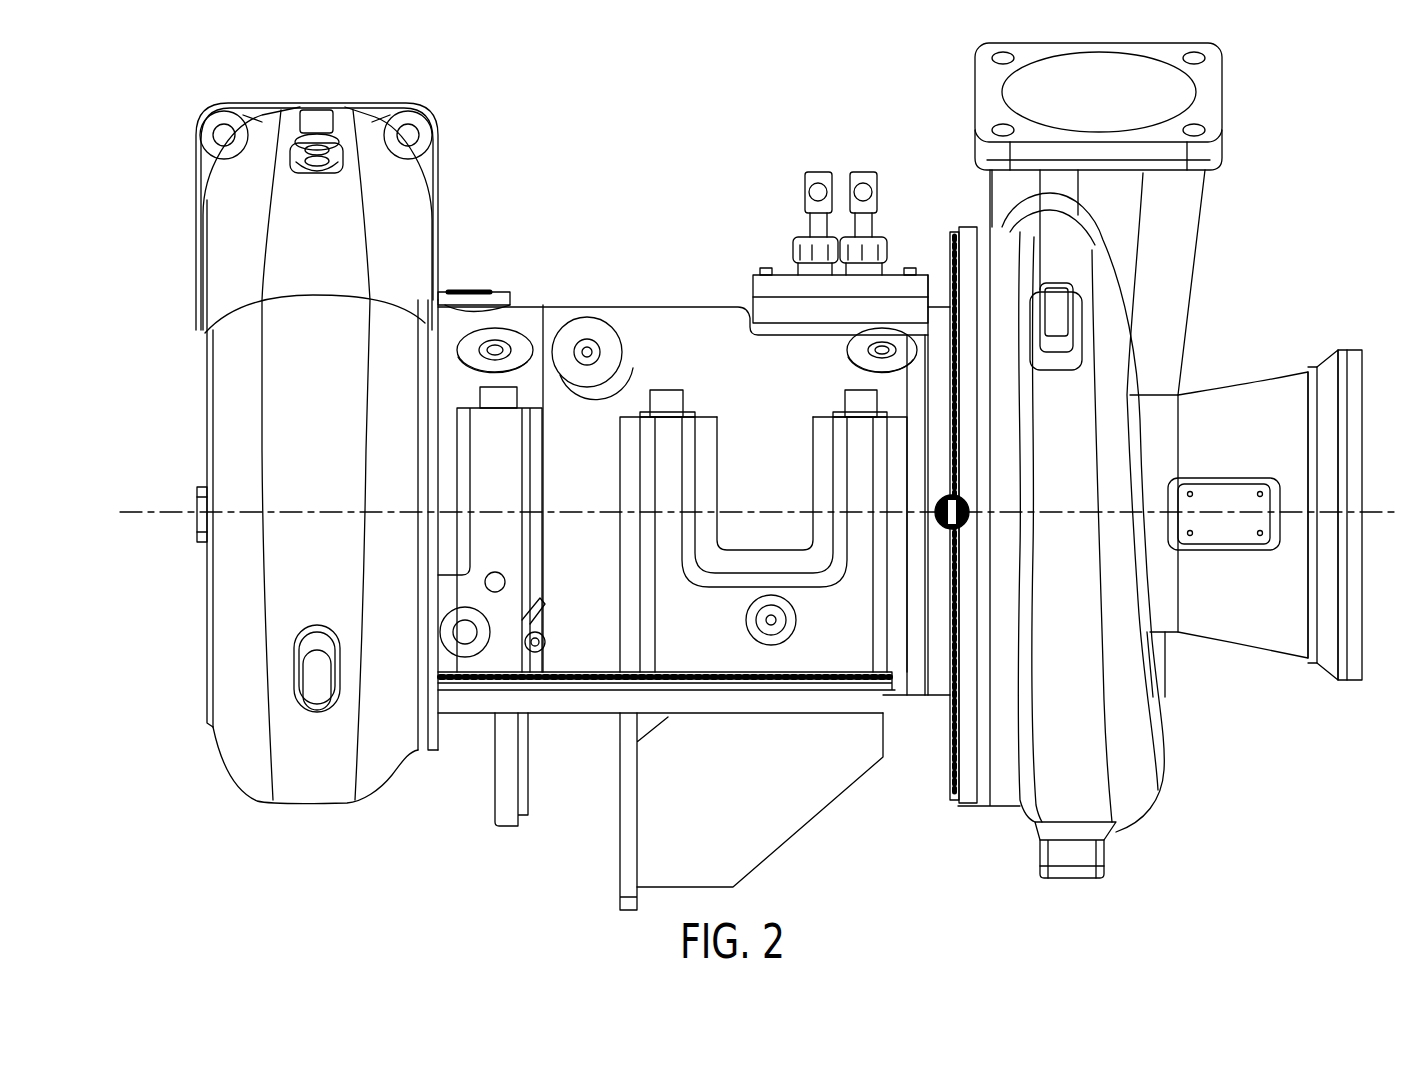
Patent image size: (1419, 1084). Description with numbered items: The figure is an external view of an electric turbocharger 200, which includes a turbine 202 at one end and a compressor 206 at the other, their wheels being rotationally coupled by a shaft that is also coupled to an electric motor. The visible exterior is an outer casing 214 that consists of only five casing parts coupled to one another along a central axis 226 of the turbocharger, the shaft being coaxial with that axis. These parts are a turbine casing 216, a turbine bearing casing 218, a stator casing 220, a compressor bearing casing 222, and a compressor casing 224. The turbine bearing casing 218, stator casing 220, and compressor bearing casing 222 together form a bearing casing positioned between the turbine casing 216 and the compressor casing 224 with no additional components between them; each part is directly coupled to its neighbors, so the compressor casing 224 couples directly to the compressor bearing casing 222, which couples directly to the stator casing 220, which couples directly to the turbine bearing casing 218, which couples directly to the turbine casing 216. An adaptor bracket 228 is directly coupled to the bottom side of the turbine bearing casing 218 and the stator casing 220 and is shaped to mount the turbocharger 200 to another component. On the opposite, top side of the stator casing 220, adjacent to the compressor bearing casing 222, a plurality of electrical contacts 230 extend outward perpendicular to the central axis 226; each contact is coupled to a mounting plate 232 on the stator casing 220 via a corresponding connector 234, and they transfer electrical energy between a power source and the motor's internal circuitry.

The turbocharger 200 is at (1262, 132).
The turbine 202 is at (263, 432).
The compressor 206 is at (1187, 460).
The outer casing 214 is at (694, 507).
The turbine casing 216 is at (203, 308).
The turbine bearing casing 218 is at (497, 320).
The stator casing 220 is at (640, 322).
The compressor bearing casing 222 is at (967, 232).
The compressor casing 224 is at (1105, 365).
The central axis 226 is at (1384, 500).
The adaptor bracket 228 is at (762, 843).
The electrical contacts 230 is at (812, 208).
The mounting plate 232 is at (770, 290).
The connector 234 is at (805, 256).